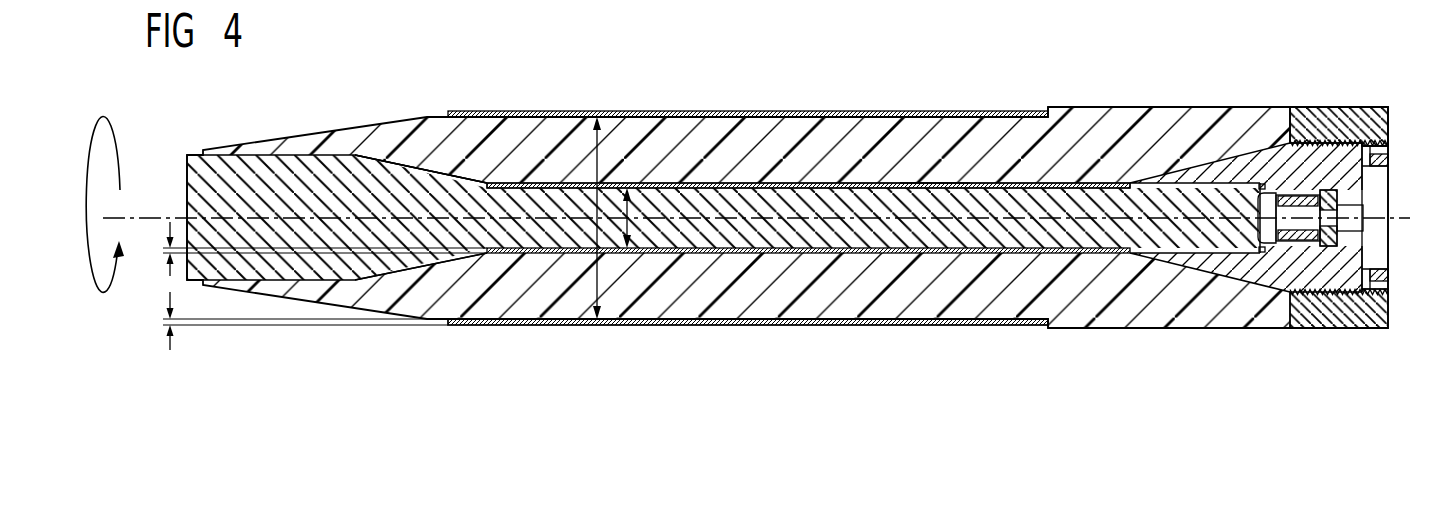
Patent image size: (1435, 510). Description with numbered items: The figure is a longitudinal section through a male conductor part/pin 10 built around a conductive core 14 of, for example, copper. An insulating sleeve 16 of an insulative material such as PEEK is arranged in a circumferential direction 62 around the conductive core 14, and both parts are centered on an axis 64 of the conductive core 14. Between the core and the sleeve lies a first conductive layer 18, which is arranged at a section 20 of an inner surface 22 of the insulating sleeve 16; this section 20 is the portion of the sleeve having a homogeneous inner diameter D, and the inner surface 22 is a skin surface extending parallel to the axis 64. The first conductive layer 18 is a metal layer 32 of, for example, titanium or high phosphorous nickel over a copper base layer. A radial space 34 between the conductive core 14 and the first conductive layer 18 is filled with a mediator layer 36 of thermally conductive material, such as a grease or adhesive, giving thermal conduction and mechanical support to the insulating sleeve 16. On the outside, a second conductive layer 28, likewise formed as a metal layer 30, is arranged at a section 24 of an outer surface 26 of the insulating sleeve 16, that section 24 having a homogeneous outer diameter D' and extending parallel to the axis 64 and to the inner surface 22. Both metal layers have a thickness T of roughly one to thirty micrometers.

The conductor part/pin 10 is at (620, 98).
The conductive core 14 is at (268, 175).
The insulating sleeve 16 is at (872, 130).
The first conductive layer 18 is at (550, 255).
The section 20 is at (693, 120).
The inner surface 22 is at (948, 190).
The section 24 is at (681, 324).
The outer surface 26 is at (802, 324).
The second conductive layer 28 is at (872, 327).
The metal layer 30 is at (872, 327).
The metal layer 32 is at (795, 183).
The radial space 34 is at (500, 190).
The mediator layer 36 is at (441, 165).
The circumferential direction 62 is at (87, 290).
The axis 64 is at (148, 218).
The thickness T is at (317, 286).
The inner diameter D is at (634, 290).
The outer diameter D' is at (584, 254).